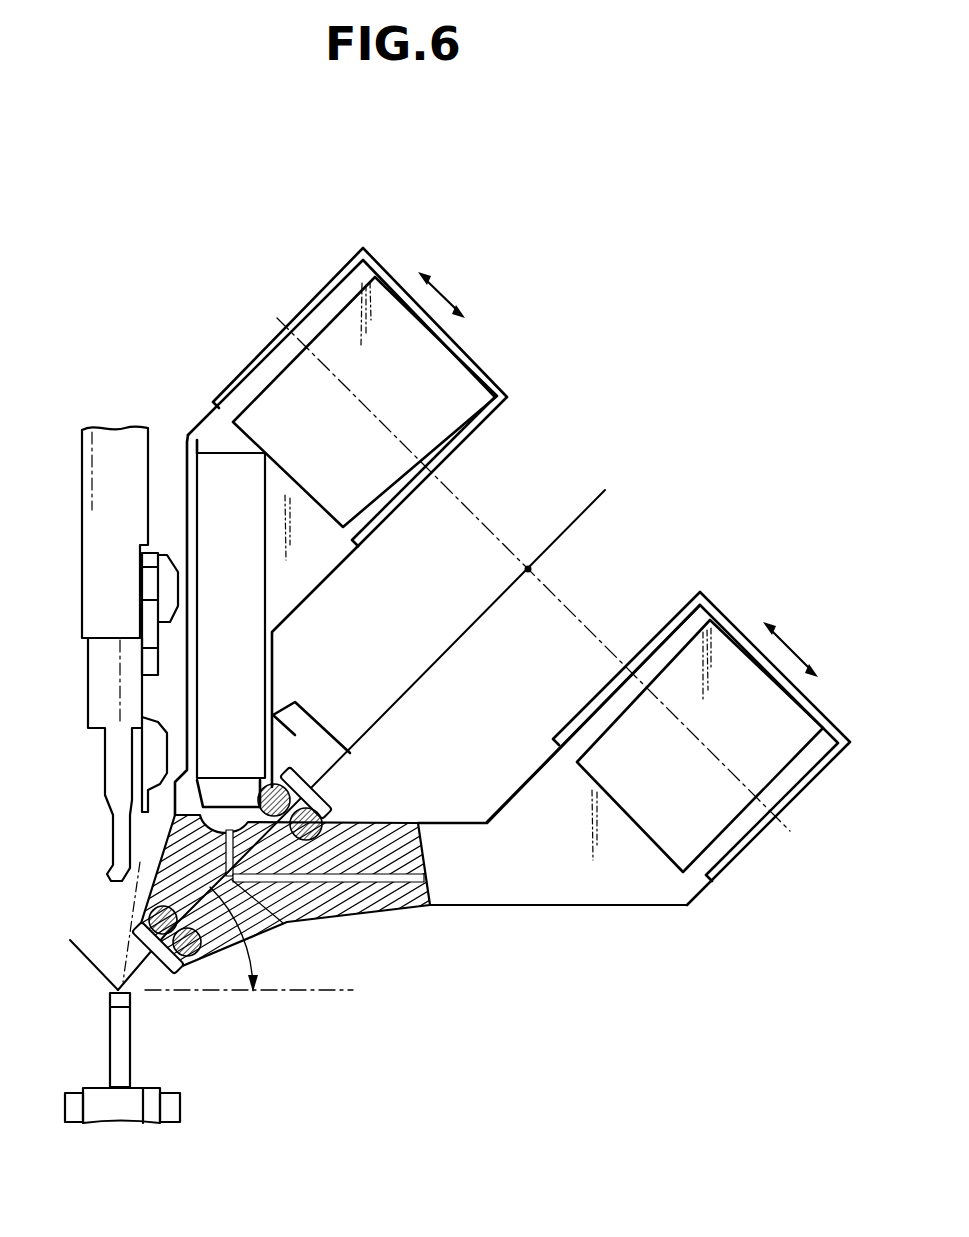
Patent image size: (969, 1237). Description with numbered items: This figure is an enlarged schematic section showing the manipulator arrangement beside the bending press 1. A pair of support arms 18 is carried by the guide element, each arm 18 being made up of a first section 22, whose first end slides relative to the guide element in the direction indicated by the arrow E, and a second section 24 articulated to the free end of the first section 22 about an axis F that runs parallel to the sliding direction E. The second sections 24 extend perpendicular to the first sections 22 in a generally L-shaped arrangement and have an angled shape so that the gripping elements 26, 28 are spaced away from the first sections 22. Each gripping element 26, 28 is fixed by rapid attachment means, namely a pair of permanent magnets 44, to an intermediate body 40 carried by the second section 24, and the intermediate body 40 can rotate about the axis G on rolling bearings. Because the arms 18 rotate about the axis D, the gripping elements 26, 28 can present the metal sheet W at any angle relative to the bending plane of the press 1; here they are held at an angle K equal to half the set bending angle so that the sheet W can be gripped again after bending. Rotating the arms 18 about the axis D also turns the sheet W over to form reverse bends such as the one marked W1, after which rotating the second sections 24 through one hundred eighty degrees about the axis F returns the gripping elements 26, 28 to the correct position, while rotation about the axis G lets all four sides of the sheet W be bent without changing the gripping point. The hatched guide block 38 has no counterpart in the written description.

The press 1 is at (78, 770).
The support arm 18 is at (425, 661).
The first section 22 is at (455, 455).
The second section 24 is at (258, 642).
The gripping element 26 is at (305, 768).
The gripping element 28 is at (347, 777).
The guide block 38 is at (428, 866).
The intermediate body 40 is at (340, 822).
The permanent magnet 44 is at (338, 796).
The metal sheet W is at (362, 735).
The reverse bend W1 is at (70, 940).
The axis of rotation of the arms D is at (532, 570).
The direction of sliding E is at (446, 296).
The articulation axis F is at (786, 830).
The axis of rotation of the gripping element G is at (285, 925).
The angle K is at (260, 952).